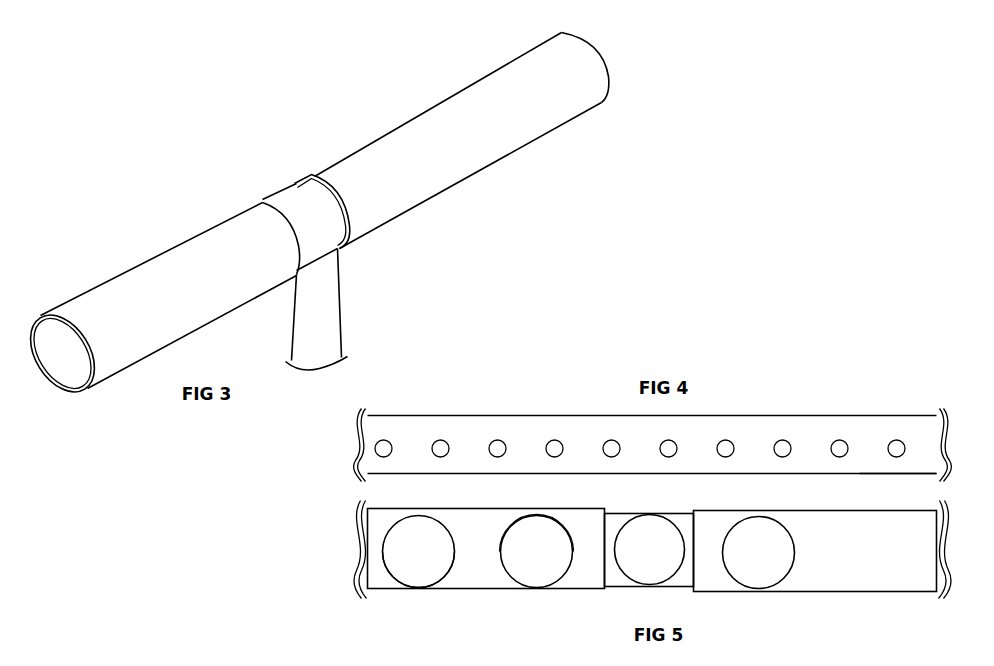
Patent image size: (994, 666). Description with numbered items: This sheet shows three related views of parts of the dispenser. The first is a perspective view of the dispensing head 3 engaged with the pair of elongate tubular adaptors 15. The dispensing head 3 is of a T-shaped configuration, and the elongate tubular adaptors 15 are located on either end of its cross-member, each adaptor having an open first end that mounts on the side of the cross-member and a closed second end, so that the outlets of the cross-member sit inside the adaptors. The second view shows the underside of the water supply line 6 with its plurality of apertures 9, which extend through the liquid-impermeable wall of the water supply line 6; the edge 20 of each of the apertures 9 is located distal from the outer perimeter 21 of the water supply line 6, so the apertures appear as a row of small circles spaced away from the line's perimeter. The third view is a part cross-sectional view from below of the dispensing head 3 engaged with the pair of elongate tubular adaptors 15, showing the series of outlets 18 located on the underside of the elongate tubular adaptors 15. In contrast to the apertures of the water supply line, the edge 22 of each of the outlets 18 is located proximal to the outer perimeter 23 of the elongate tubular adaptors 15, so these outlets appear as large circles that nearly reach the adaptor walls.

In FIG. 3, the dispensing head 3 is at (343, 304).
In FIG. 5, the dispensing head 3 is at (617, 583).
In FIG. 4, the water supply line 6 is at (787, 420).
In FIG. 4, the apertures 9 is at (497, 447).
In FIG. 3, the elongate tubular adaptors 15 is at (445, 130).
In FIG. 5, the elongate tubular adaptors 15 is at (462, 578).
In FIG. 5, the outlets 18 is at (423, 527).
In FIG. 4, the edge 20 is at (899, 438).
In FIG. 4, the outer perimeter 21 is at (873, 474).
In FIG. 5, the edge 22 is at (402, 583).
In FIG. 5, the outer perimeter 23 is at (533, 512).